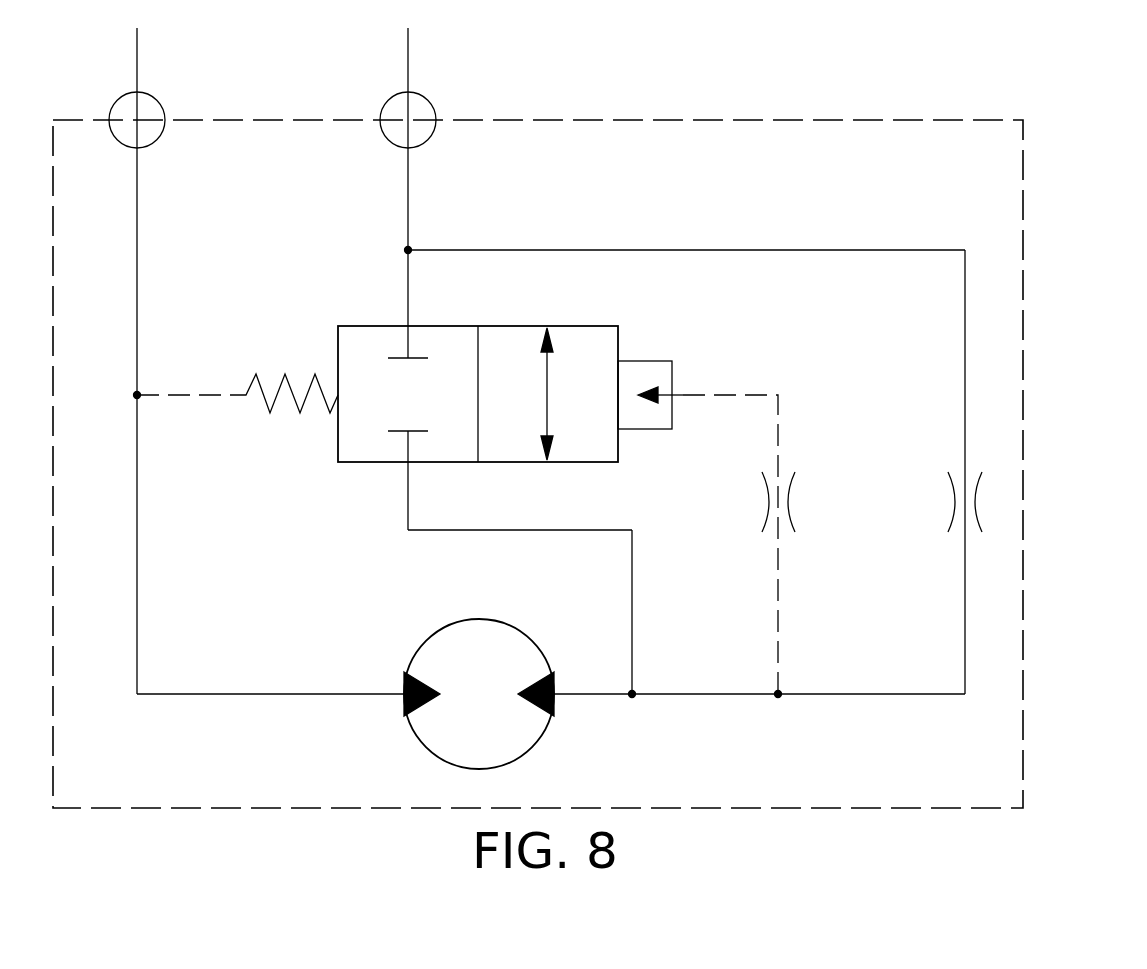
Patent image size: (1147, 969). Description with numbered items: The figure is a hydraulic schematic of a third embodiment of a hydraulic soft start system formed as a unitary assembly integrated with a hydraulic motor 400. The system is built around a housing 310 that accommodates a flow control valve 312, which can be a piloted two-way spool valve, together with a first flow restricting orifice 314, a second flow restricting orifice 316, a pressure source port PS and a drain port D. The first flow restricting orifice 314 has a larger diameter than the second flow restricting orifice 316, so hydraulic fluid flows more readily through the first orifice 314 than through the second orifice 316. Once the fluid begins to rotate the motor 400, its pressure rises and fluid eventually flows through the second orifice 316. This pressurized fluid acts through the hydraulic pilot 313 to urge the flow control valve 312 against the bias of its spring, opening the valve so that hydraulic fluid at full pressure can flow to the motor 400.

The housing 310 is at (1025, 370).
The flow control valve 312 is at (575, 462).
The hydraulic pilot 313 is at (645, 361).
The first flow restricting orifice 314 is at (958, 490).
The second flow restricting orifice 316 is at (772, 490).
The hydraulic motor 400 is at (533, 745).
The drain port D is at (153, 97).
The pressure source port PS is at (424, 97).